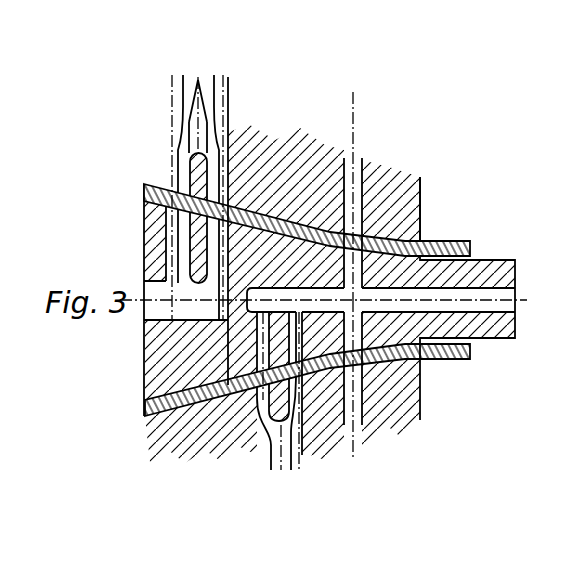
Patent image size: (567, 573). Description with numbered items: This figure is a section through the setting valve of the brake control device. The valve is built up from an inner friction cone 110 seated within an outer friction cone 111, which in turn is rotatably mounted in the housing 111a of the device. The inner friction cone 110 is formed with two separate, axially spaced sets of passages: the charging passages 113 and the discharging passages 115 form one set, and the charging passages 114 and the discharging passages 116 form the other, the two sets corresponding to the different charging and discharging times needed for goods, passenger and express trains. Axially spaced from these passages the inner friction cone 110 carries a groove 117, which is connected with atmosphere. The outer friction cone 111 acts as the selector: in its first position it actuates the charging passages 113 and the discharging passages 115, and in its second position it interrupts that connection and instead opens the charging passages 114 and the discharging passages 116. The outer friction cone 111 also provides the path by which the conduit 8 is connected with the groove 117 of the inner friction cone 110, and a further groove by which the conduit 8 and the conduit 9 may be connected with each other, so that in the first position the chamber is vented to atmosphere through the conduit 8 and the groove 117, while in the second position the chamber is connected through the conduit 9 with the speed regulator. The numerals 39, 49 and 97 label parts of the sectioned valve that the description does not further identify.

The conduit 8 is at (362, 176).
The conduit 9 is at (363, 425).
The lower tube 39 is at (292, 467).
The needle tube 49 is at (202, 120).
The left body block 97 is at (155, 317).
The inner friction cone 110 is at (152, 191).
The outer friction cone 111 is at (148, 418).
The housing 111a is at (317, 175).
The charging passages 113 is at (178, 228).
The charging passages 114 is at (214, 122).
The discharging passages 115 is at (256, 417).
The discharging passages 116 is at (306, 383).
The groove 117 is at (381, 244).